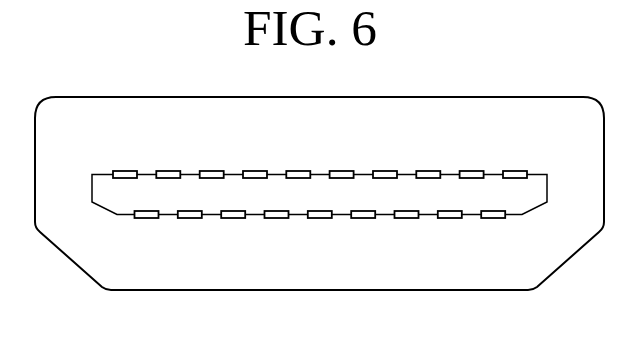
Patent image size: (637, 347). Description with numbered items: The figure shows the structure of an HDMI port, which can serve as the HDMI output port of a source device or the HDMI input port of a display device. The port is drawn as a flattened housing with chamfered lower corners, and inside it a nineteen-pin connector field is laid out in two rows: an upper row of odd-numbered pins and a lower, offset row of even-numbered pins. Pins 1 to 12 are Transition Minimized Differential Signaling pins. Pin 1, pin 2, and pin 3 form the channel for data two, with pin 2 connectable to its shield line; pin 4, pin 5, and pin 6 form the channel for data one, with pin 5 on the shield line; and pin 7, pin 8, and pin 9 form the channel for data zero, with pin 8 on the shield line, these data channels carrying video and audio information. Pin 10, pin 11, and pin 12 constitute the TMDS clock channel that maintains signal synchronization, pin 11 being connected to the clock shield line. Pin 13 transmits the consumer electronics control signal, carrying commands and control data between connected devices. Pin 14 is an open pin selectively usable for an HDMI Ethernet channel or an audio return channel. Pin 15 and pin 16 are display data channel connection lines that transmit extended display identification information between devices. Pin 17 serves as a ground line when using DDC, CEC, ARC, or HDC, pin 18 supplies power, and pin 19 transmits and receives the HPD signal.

The pin 1 is at (515, 161).
The pin 2 is at (493, 228).
The pin 3 is at (472, 161).
The pin 4 is at (450, 228).
The pin 5 is at (428, 161).
The pin 6 is at (407, 228).
The pin 7 is at (385, 161).
The pin 8 is at (363, 228).
The pin 9 is at (342, 161).
The pin 10 is at (320, 228).
The pin 11 is at (298, 161).
The pin 12 is at (277, 228).
The pin 13 is at (255, 161).
The pin 14 is at (233, 228).
The pin 15 is at (212, 161).
The pin 16 is at (190, 228).
The pin 17 is at (168, 161).
The pin 18 is at (147, 228).
The pin 19 is at (125, 161).